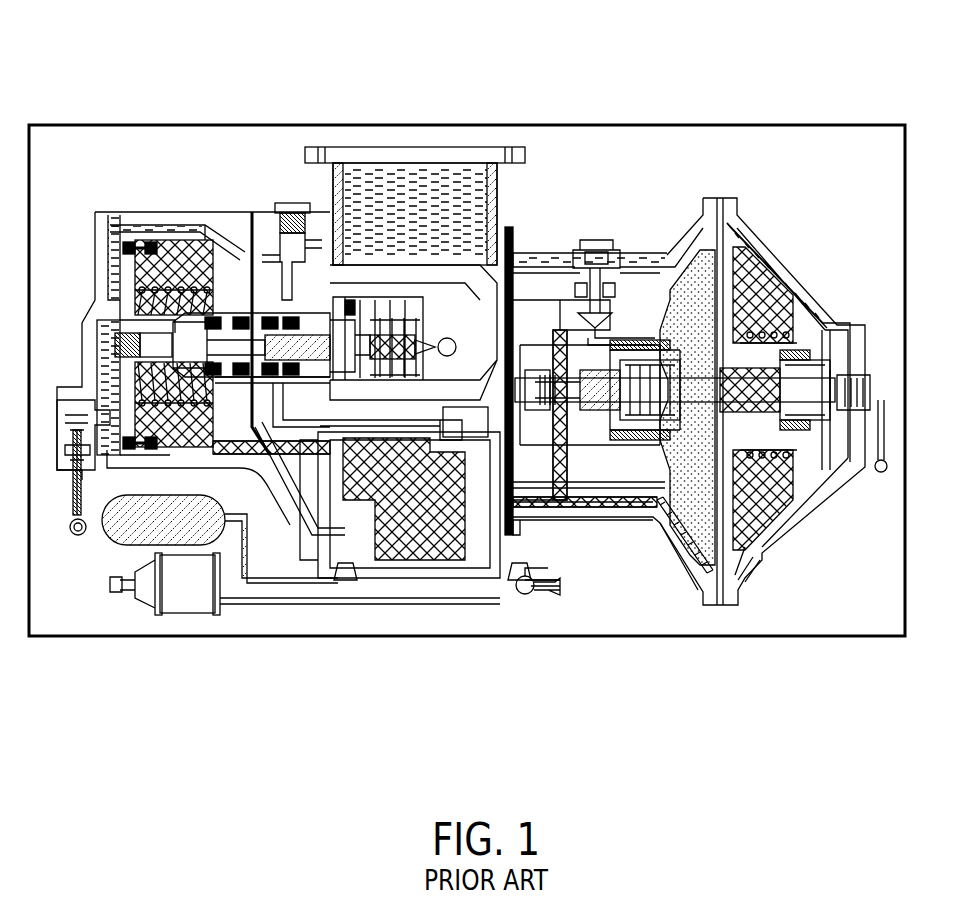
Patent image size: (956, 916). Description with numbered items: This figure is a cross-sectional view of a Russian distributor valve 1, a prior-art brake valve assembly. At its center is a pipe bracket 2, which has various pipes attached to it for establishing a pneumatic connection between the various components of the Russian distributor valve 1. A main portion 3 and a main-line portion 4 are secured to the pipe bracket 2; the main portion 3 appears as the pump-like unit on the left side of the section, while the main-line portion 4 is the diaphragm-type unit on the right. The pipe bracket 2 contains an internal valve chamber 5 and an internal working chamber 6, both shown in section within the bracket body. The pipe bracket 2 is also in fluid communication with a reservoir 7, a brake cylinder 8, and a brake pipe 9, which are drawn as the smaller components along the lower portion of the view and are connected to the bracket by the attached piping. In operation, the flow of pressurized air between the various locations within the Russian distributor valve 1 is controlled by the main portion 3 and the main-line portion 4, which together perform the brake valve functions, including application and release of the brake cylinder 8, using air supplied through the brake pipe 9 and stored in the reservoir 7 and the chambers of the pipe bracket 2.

The Russian distributor valve 1 is at (548, 96).
The pipe bracket 2 is at (425, 565).
The main portion 3 is at (231, 226).
The main-line portion 4 is at (646, 262).
The internal valve chamber 5 is at (411, 518).
The internal working chamber 6 is at (398, 188).
The reservoir 7 is at (130, 523).
The brake cylinder 8 is at (146, 590).
The brake pipe 9 is at (550, 583).